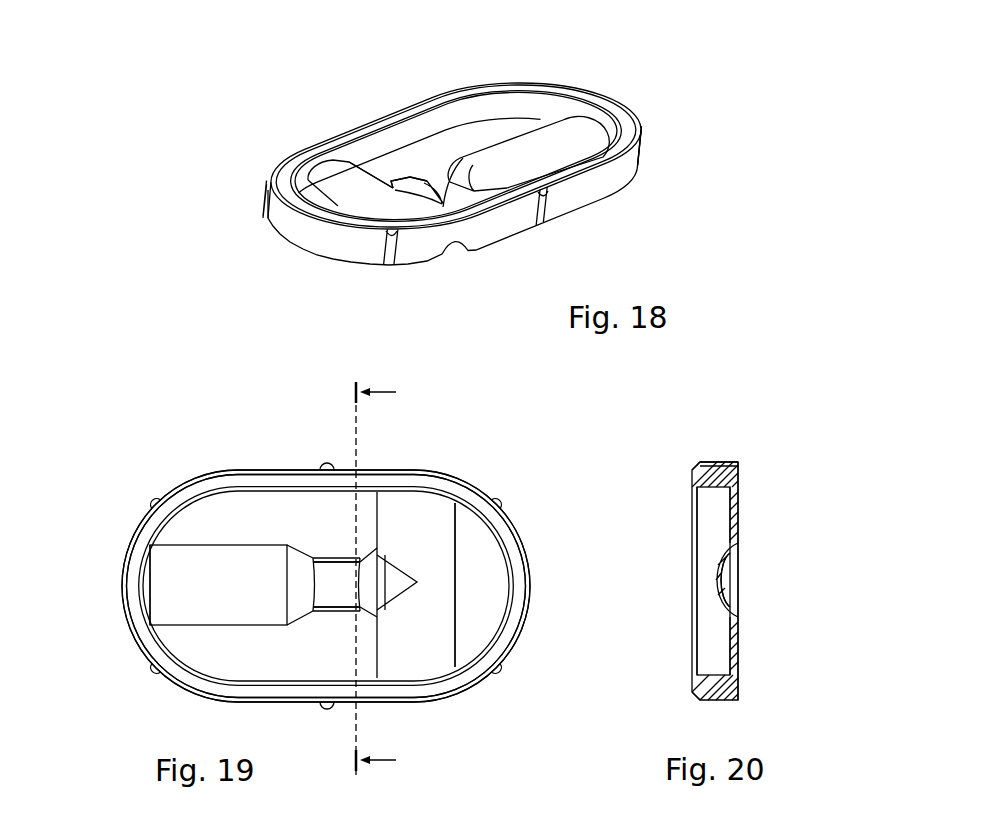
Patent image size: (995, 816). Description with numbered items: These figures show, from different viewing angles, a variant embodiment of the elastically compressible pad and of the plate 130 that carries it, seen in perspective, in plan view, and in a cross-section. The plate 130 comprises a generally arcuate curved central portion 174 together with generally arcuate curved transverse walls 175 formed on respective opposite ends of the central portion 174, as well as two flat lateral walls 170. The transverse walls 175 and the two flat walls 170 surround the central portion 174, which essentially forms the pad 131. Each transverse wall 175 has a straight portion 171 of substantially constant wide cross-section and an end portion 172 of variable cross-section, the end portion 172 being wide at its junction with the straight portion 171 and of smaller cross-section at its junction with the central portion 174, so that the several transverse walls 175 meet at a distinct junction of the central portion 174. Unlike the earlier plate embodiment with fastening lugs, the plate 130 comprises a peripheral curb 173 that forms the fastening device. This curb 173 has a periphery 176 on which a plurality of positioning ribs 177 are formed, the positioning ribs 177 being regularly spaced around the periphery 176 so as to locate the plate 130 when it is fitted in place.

In FIG. 18, the plate 130 is at (657, 60).
In FIG. 19, the plate 130 is at (100, 462).
In FIG. 20, the plate 130 is at (778, 448).
In FIG. 18, the pad 131 is at (432, 163).
In FIG. 19, the pad 131 is at (347, 548).
In FIG. 20, the pad 131 is at (756, 559).
In FIG. 18, the flat lateral walls 170 is at (480, 136).
In FIG. 20, the flat lateral walls 170 is at (731, 522).
In FIG. 18, the straight portion 171 is at (322, 191).
In FIG. 19, the straight portion 171 is at (302, 585).
In FIG. 18, the end portion 172 is at (414, 184).
In FIG. 19, the end portion 172 is at (377, 607).
In FIG. 18, the peripheral curb 173 is at (338, 136).
In FIG. 19, the peripheral curb 173 is at (508, 630).
In FIG. 20, the peripheral curb 173 is at (697, 474).
In FIG. 18, the central portion 174 is at (473, 222).
In FIG. 19, the central portion 174 is at (330, 566).
In FIG. 20, the central portion 174 is at (725, 578).
In FIG. 18, the transverse walls 175 is at (353, 197).
In FIG. 19, the transverse walls 175 is at (193, 538).
In FIG. 20, the transverse walls 175 is at (712, 587).
In FIG. 18, the periphery 176 is at (594, 189).
In FIG. 19, the periphery 176 is at (402, 468).
In FIG. 20, the periphery 176 is at (738, 460).
In FIG. 18, the positioning ribs 177 is at (389, 268).
In FIG. 19, the positioning ribs 177 is at (500, 669).
In FIG. 20, the positioning ribs 177 is at (712, 460).